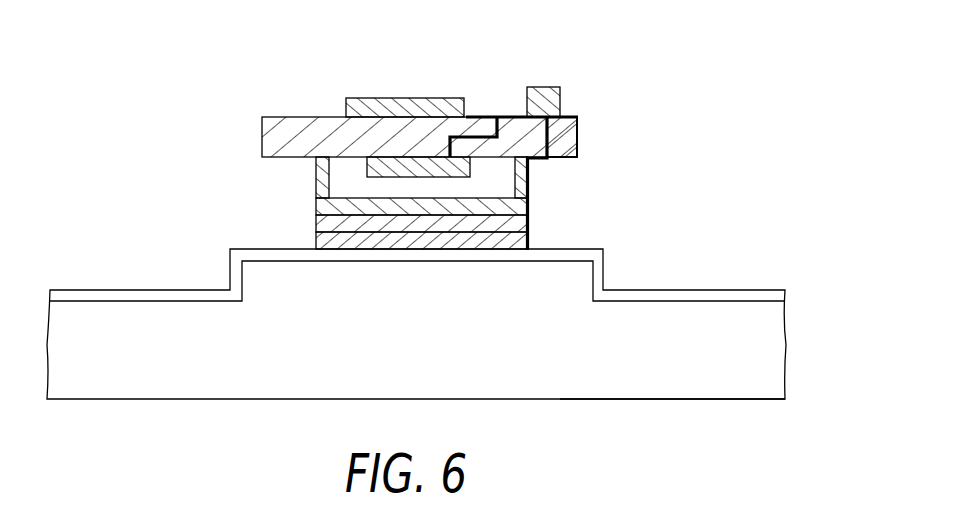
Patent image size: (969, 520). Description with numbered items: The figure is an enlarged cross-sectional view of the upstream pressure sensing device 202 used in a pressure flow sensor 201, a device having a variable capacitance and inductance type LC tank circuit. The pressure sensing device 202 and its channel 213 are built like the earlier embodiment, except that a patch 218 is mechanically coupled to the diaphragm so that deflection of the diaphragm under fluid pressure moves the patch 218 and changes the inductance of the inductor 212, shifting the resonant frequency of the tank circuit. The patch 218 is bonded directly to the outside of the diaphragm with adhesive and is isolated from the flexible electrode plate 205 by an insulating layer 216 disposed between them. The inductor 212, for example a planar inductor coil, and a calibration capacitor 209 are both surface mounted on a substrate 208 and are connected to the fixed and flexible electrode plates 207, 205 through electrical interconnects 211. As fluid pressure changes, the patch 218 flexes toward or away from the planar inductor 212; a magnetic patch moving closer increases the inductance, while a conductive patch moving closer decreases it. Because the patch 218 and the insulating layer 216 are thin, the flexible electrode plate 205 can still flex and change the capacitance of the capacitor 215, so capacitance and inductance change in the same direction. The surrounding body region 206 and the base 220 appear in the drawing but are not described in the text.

The pressure flow sensor 201 is at (797, 94).
The upstream pressure sensing device 202 is at (670, 91).
The flexible electrode plate 205 is at (528, 207).
The side wall 206 is at (316, 175).
The fixed electrode plate 207 is at (510, 117).
The substrate 208 is at (262, 133).
The calibration capacitor 209 is at (562, 102).
The electrical interconnects 211 is at (486, 115).
The inductor 212 is at (392, 98).
The channel 213 is at (663, 399).
The capacitor 215 is at (675, 192).
The insulating layer 216 is at (528, 223).
The patch 218 is at (528, 241).
The substrate 220 is at (423, 362).